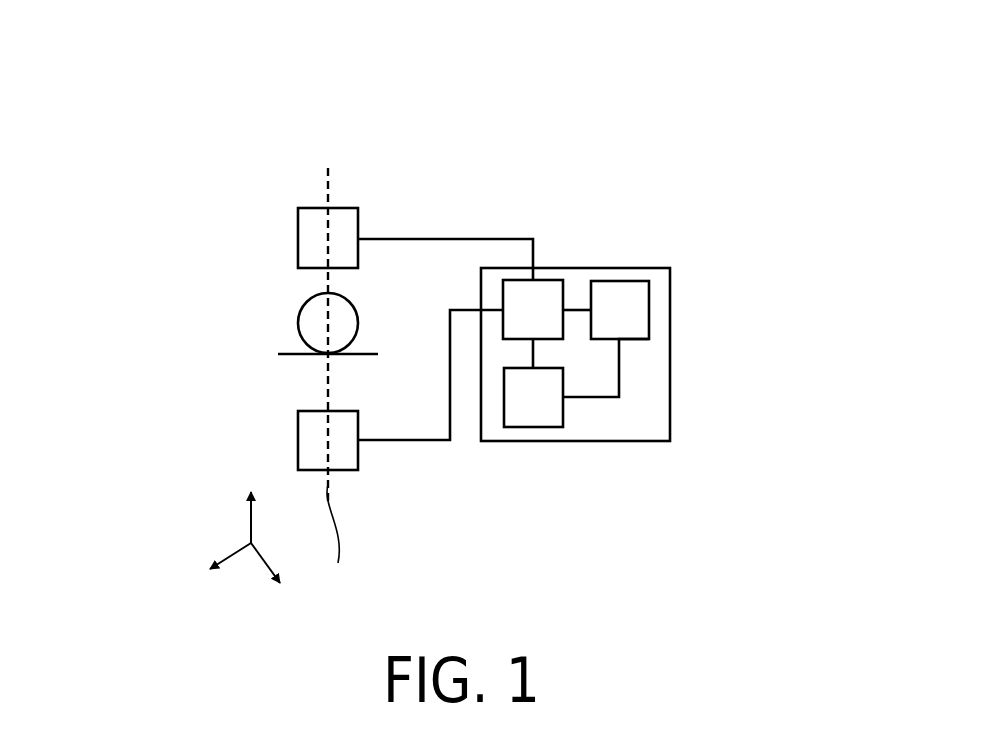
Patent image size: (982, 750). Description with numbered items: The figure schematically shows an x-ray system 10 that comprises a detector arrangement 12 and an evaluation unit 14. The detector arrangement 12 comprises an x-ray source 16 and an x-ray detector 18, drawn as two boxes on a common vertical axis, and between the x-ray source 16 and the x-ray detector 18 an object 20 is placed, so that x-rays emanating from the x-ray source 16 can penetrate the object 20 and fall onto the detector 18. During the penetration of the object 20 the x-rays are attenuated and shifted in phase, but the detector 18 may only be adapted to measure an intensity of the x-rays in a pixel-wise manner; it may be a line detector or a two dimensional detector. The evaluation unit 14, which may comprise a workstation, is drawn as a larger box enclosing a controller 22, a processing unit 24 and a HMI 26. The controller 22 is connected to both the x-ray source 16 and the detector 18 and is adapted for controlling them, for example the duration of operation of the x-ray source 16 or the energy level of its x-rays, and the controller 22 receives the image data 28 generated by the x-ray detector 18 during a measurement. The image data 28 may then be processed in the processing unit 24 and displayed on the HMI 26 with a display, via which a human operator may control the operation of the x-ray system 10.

The x-ray system 10 is at (180, 102).
The detector arrangement 12 is at (316, 138).
The evaluation unit 14 is at (670, 270).
The x-ray source 16 is at (298, 240).
The x-ray detector 18 is at (298, 450).
The object 20 is at (298, 330).
The controller 22 is at (545, 280).
The processing unit 24 is at (542, 428).
The HMI 26 is at (649, 310).
The image data 28 is at (430, 443).